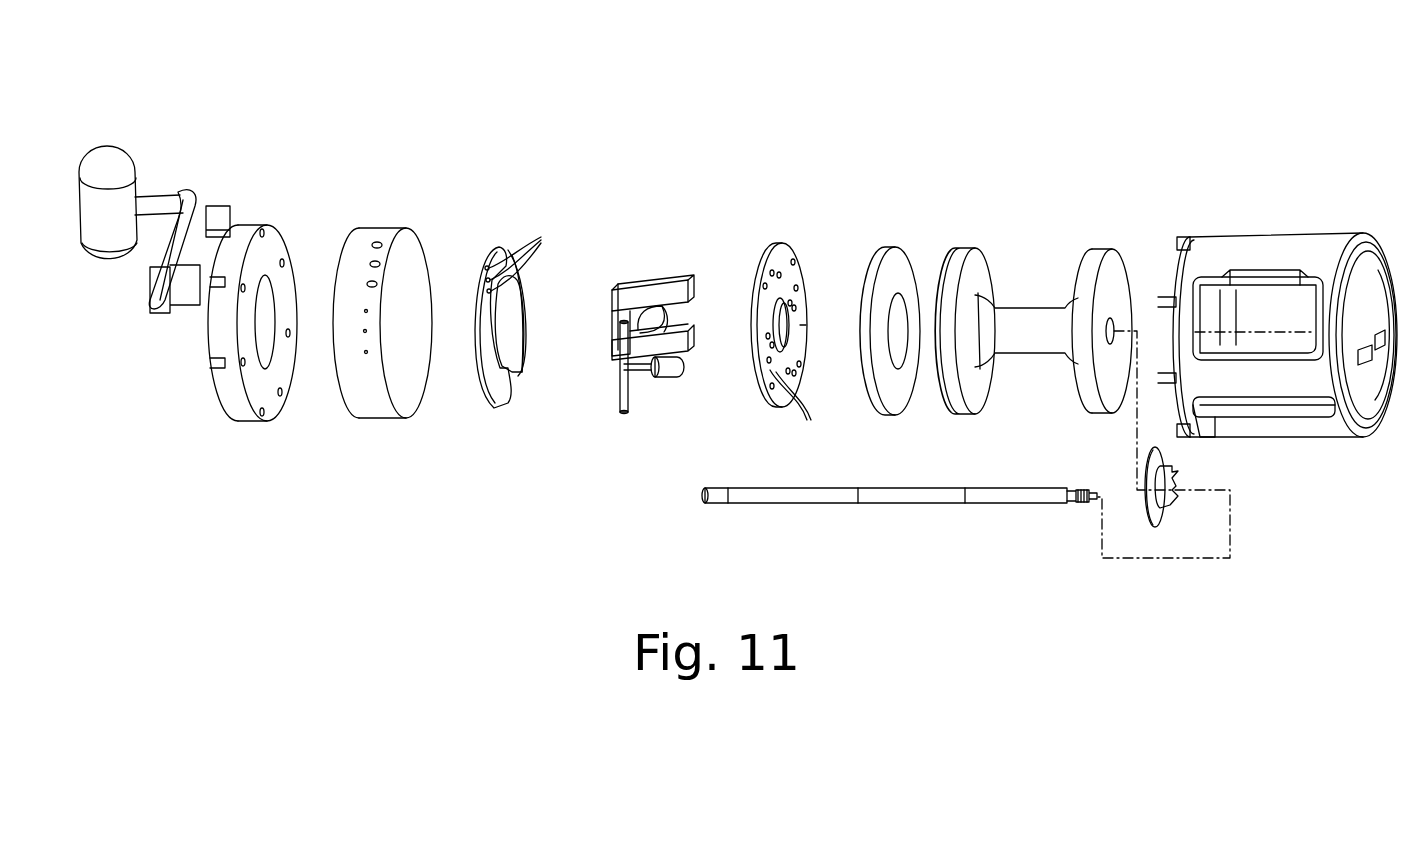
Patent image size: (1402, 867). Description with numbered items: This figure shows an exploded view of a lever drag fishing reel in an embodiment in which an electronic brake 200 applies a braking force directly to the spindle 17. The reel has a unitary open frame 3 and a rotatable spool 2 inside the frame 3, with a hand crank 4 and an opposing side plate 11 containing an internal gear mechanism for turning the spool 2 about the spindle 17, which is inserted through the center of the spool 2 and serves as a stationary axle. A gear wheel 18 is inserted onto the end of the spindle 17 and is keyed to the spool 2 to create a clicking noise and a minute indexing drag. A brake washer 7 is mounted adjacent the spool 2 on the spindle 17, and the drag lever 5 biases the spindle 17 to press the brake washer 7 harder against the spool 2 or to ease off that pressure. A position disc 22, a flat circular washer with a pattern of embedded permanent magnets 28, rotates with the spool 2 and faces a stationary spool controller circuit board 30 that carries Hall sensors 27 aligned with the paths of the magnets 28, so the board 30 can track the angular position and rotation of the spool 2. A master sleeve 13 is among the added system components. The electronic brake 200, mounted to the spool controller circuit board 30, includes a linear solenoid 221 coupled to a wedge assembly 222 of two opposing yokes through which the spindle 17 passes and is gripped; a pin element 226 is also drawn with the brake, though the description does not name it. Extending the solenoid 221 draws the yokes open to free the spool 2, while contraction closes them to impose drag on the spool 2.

The hand crank 4 is at (118, 146).
The drag lever 5 is at (216, 206).
The side plate 11 is at (252, 230).
The master sleeve 13 is at (385, 228).
The spool controller circuit board 30 is at (498, 252).
The Hall sensors 27 is at (530, 255).
The electronic brake 200 is at (621, 306).
The wedge assembly 222 is at (642, 282).
The pin 226 is at (618, 402).
The linear solenoid 221 is at (672, 378).
The position disc 22 is at (780, 243).
The permanent magnets 28 is at (796, 413).
The brake washer 7 is at (885, 247).
The spool 2 is at (972, 248).
The open frame 3 is at (1233, 237).
The spindle 17 is at (703, 490).
The gear wheel 18 is at (1180, 502).